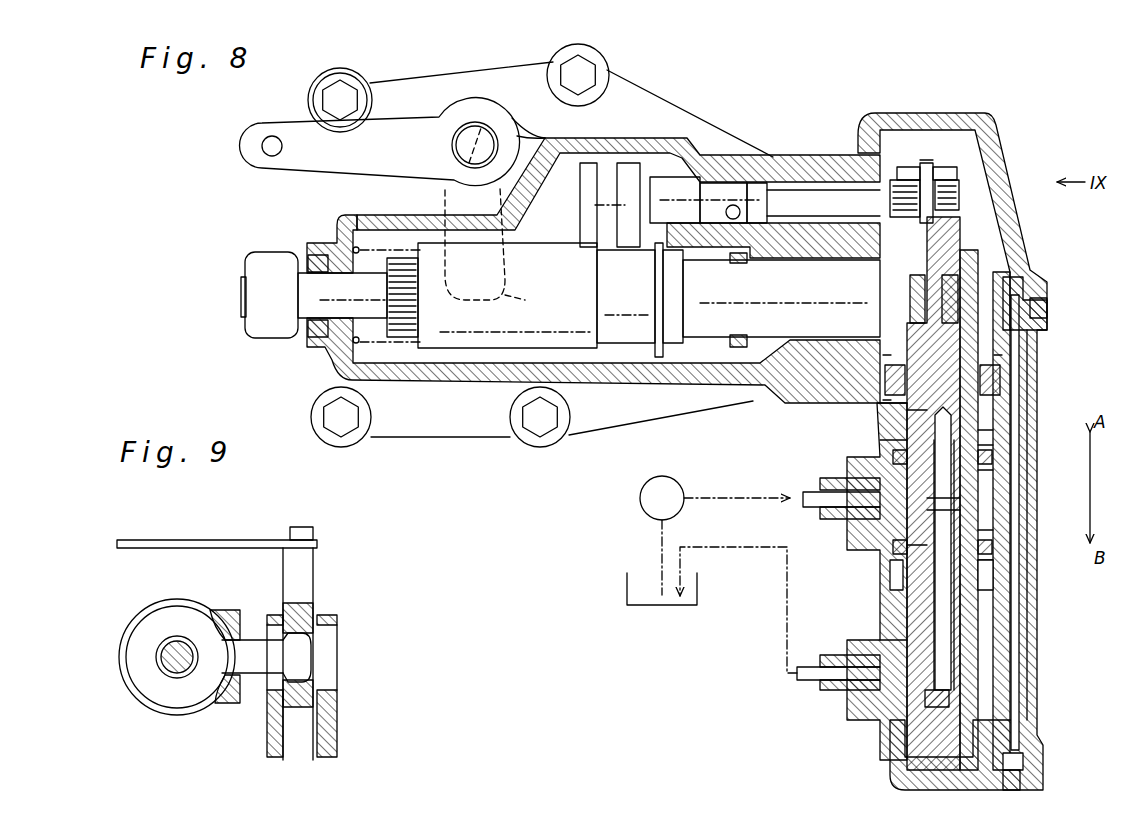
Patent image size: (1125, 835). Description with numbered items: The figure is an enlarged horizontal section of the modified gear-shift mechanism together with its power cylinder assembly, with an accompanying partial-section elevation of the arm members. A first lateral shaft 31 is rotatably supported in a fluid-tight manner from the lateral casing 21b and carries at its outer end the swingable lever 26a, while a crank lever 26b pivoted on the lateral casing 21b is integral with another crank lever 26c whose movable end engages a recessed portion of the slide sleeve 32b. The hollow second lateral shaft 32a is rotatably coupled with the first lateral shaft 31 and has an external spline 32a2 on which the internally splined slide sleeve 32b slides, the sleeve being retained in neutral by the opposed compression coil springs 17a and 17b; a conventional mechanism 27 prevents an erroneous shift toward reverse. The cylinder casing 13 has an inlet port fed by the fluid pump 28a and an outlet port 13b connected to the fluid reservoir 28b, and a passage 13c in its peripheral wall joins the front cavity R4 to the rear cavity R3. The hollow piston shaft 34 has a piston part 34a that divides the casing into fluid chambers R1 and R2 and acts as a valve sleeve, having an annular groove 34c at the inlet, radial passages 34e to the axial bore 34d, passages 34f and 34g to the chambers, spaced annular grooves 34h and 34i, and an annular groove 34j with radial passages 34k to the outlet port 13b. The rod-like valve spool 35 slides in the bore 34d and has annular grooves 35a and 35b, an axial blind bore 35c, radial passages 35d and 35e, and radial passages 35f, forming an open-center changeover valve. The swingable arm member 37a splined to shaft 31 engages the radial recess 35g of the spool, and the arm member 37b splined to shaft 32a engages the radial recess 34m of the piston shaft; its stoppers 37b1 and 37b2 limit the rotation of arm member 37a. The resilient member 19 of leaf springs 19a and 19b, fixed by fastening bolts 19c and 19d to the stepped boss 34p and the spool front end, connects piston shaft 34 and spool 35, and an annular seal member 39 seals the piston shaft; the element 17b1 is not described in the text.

In FIG. 8, the cylinder casing 13 is at (847, 470).
In FIG. 8, the outlet port 13b is at (880, 700).
In FIG. 8, the passage 13c is at (1019, 706).
In FIG. 8, the compression coil spring 17a is at (372, 248).
In FIG. 8, the compression coil spring 17b is at (705, 352).
In FIG. 8, the rod portion 17b1 is at (625, 340).
In FIG. 9, the resilient member 19 is at (195, 540).
In FIG. 8, the leaf spring 19a is at (932, 178).
In FIG. 8, the leaf spring 19b is at (960, 184).
In FIG. 8, the fastening bolt 19c is at (906, 168).
In FIG. 8, the fastening bolt 19d is at (958, 168).
In FIG. 9, the fastening bolt 19d is at (303, 527).
In FIG. 8, the lateral casing 21b is at (590, 143).
In FIG. 8, the swingable lever 26a is at (278, 330).
In FIG. 8, the crank lever 26b is at (302, 158).
In FIG. 8, the crank lever 26c is at (503, 250).
In FIG. 8, the error-preventing mechanism 27 is at (690, 190).
In FIG. 8, the fluid pump 28a is at (640, 496).
In FIG. 8, the fluid reservoir 28b is at (625, 590).
In FIG. 8, the first lateral shaft 31 is at (345, 318).
In FIG. 9, the first lateral shaft 31 is at (178, 640).
In FIG. 8, the second lateral shaft 32a is at (783, 330).
In FIG. 8, the external spline 32a2 is at (400, 340).
In FIG. 8, the slide sleeve 32b is at (487, 348).
In FIG. 8, the piston shaft 34 is at (980, 338).
In FIG. 9, the piston shaft 34 is at (327, 745).
In FIG. 8, the piston part 34a is at (870, 523).
In FIG. 8, the annular groove 34c is at (1000, 540).
In FIG. 8, the axial bore 34d is at (975, 352).
In FIG. 8, the radial passages 34e is at (965, 500).
In FIG. 8, the passage 34f is at (1000, 460).
In FIG. 8, the passage 34g is at (1000, 557).
In FIG. 8, the annular groove 34h is at (1005, 432).
In FIG. 8, the annular groove 34i is at (990, 588).
In FIG. 8, the annular groove 34j is at (905, 640).
In FIG. 8, the radial passages 34k is at (895, 735).
In FIG. 8, the radial recess 34m is at (910, 283).
In FIG. 8, the stepped boss 34p is at (890, 198).
In FIG. 8, the valve spool 35 is at (955, 238).
In FIG. 9, the valve spool 35 is at (313, 568).
In FIG. 8, the annular groove 35a is at (905, 457).
In FIG. 8, the annular groove 35b is at (893, 550).
In FIG. 8, the axial blind bore 35c is at (965, 665).
In FIG. 8, the radial passage 35d is at (920, 424).
In FIG. 8, the radial passage 35e is at (905, 583).
In FIG. 8, the radial passages 35f is at (940, 710).
In FIG. 8, the radial recess 35g is at (985, 275).
In FIG. 9, the radial recess 35g is at (310, 645).
In FIG. 8, the swingable arm member 37a is at (990, 285).
In FIG. 9, the swingable arm member 37a is at (138, 690).
In FIG. 8, the swingable arm member 37b is at (908, 312).
In FIG. 9, the swingable arm member 37b is at (160, 712).
In FIG. 9, the stopper 37b1 is at (236, 610).
In FIG. 9, the stopper 37b2 is at (235, 704).
In FIG. 8, the annular seal member 39 is at (880, 365).
In FIG. 8, the fluid chamber R1 is at (990, 414).
In FIG. 8, the fluid chamber R2 is at (995, 640).
In FIG. 8, the rear cavity R3 is at (1000, 757).
In FIG. 8, the front cavity R4 is at (962, 138).